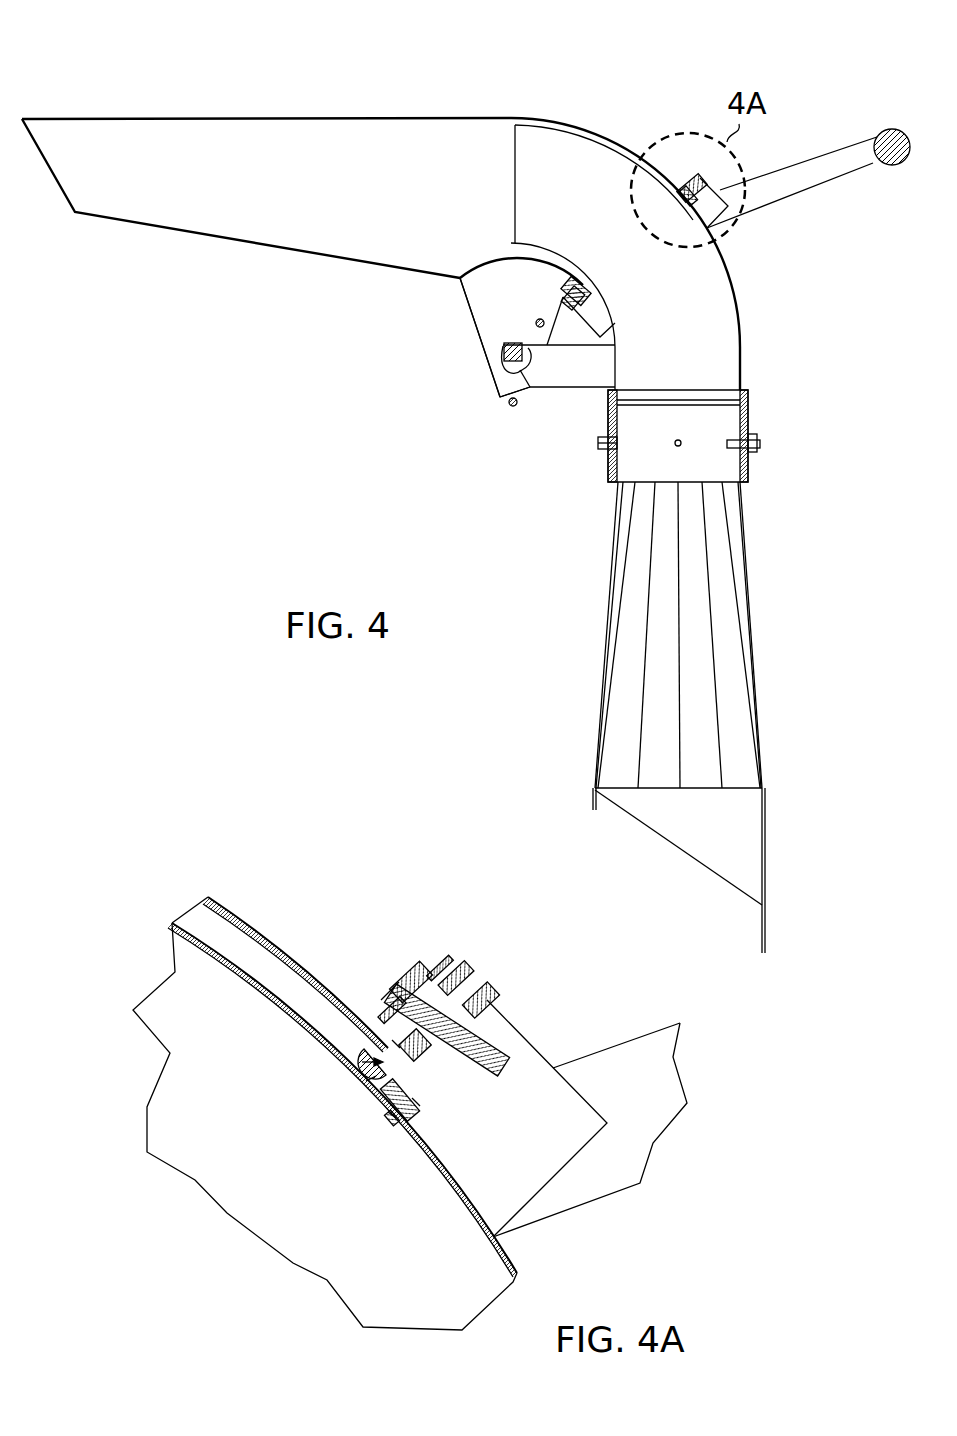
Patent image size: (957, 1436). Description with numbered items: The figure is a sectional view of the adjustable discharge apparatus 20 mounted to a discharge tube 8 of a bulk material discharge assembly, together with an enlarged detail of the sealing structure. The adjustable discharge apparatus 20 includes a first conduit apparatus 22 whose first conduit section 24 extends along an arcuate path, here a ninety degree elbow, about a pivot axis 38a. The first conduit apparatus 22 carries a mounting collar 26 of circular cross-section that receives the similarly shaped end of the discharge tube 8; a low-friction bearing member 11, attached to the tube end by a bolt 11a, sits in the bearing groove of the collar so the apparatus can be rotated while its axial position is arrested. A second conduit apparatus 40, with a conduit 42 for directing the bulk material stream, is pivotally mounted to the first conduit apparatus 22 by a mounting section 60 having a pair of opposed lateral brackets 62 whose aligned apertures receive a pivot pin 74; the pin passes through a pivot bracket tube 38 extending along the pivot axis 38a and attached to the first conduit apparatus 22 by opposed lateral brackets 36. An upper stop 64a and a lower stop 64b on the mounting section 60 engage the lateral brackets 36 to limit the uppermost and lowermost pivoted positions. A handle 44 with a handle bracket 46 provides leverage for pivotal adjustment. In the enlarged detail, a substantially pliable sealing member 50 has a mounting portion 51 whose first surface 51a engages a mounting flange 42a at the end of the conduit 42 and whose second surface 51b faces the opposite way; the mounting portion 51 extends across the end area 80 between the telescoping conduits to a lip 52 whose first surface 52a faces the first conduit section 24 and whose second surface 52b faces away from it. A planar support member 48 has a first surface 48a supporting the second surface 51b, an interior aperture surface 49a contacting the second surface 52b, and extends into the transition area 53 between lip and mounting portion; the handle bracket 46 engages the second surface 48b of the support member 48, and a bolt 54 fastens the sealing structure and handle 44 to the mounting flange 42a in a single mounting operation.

In FIG. 4, the discharge tube 8 is at (747, 545).
In FIG. 4, the bearing member 11 is at (752, 434).
In FIG. 4, the bolt 11a is at (765, 443).
In FIG. 4, the adjustable discharge apparatus 20 is at (320, 353).
In FIG. 4, the first conduit apparatus 22 is at (750, 292).
In FIG. 4, the first conduit section 24 is at (726, 270).
In FIG. 4A, the first conduit section 24 is at (516, 1270).
In FIG. 4, the mounting collar 26 is at (765, 400).
In FIG. 4, the lateral brackets 36 is at (558, 375).
In FIG. 4, the pivot bracket tube 38 is at (505, 350).
In FIG. 4, the pivot axis 38a is at (520, 370).
In FIG. 4, the second conduit apparatus 40 is at (505, 103).
In FIG. 4, the conduit 42 is at (268, 119).
In FIG. 4A, the mounting flange 42a is at (441, 964).
In FIG. 4, the handle 44 is at (835, 155).
In FIG. 4A, the handle 44 is at (611, 1190).
In FIG. 4A, the handle bracket 46 is at (488, 1000).
In FIG. 4A, the support member 48 is at (482, 990).
In FIG. 4A, the first surface of the support member 48a is at (372, 1052).
In FIG. 4A, the second surface of the support member 48b is at (424, 1066).
In FIG. 4A, the interior surface of the aperture 49a is at (366, 1081).
In FIG. 4A, the sealing member 50 is at (458, 970).
In FIG. 4A, the mounting portion 51 is at (391, 1013).
In FIG. 4A, the first surface of the mounting portion 51a is at (395, 996).
In FIG. 4A, the second surface of the mounting portion 51b is at (420, 1052).
In FIG. 4A, the lip 52 is at (407, 1126).
In FIG. 4A, the first surface of the lip 52a is at (396, 1117).
In FIG. 4A, the second surface of the lip 52b is at (420, 1106).
In FIG. 4A, the transition area 53 is at (386, 1096).
In FIG. 4A, the bolt 54 is at (406, 965).
In FIG. 4, the mounting section 60 is at (500, 412).
In FIG. 4, the lateral brackets 62 is at (470, 300).
In FIG. 4, the upper stop 64a is at (538, 320).
In FIG. 4, the lower stop 64b is at (515, 408).
In FIG. 4, the pivot pin 74 is at (503, 356).
In FIG. 4A, the end area 80 is at (360, 1062).